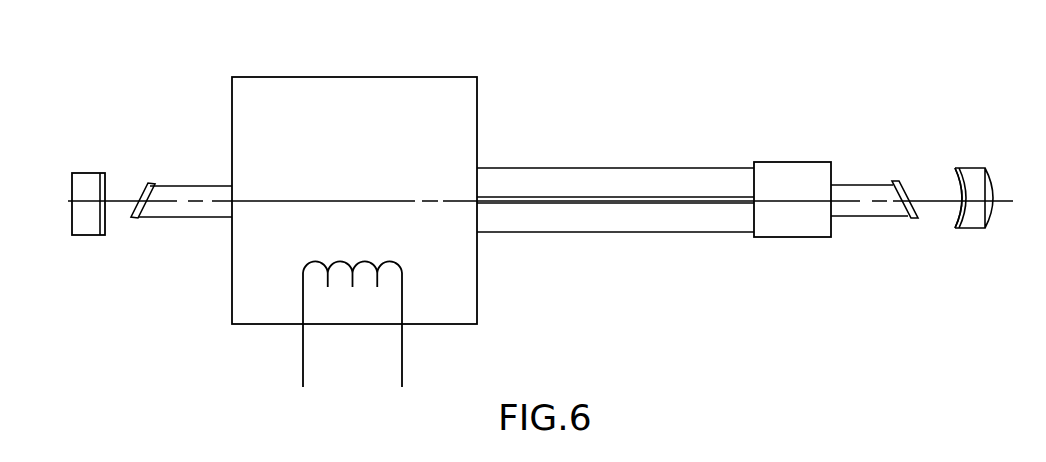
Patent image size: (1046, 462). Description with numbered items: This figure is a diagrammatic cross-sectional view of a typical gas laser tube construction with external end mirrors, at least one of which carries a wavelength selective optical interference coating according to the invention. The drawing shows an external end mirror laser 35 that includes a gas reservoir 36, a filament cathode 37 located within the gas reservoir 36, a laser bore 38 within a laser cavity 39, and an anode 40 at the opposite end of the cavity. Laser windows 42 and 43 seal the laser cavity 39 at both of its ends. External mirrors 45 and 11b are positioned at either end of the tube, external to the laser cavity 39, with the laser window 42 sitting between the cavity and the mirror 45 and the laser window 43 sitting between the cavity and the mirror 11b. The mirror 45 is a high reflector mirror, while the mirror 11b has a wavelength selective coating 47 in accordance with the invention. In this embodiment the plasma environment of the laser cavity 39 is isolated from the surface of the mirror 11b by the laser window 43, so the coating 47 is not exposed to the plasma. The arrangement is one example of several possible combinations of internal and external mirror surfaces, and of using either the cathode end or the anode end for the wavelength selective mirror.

The external end mirror laser 35 is at (594, 43).
The gas reservoir 36 is at (467, 98).
The filament cathode 37 is at (302, 304).
The laser bore 38 is at (630, 197).
The laser cavity 39 is at (512, 149).
The anode 40 is at (783, 168).
The laser window 42 is at (143, 186).
The laser window 43 is at (903, 180).
The external mirror 45 is at (88, 236).
The wavelength selective coating 47 is at (955, 221).
The external mirror 11b is at (975, 223).